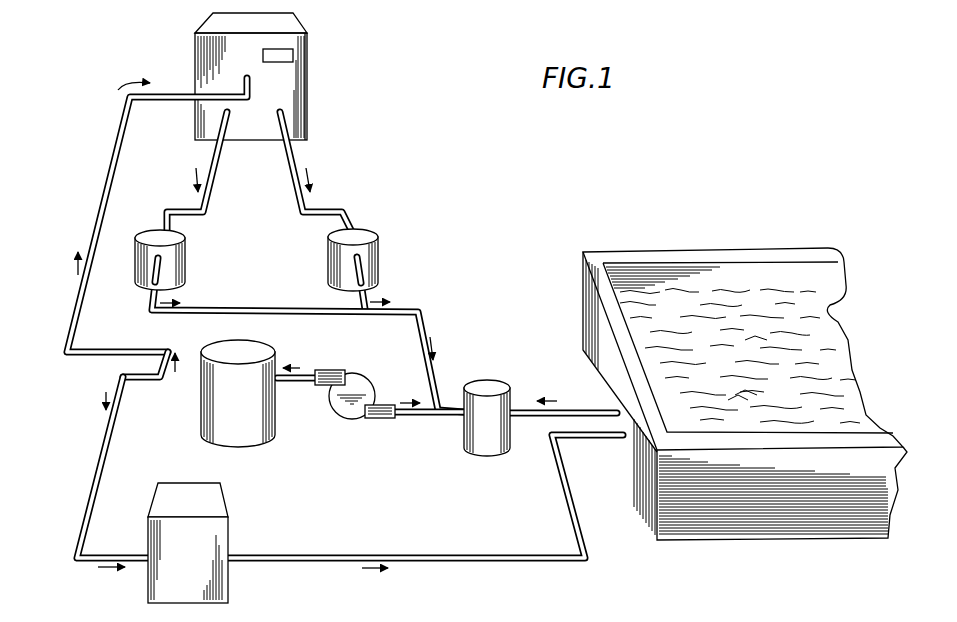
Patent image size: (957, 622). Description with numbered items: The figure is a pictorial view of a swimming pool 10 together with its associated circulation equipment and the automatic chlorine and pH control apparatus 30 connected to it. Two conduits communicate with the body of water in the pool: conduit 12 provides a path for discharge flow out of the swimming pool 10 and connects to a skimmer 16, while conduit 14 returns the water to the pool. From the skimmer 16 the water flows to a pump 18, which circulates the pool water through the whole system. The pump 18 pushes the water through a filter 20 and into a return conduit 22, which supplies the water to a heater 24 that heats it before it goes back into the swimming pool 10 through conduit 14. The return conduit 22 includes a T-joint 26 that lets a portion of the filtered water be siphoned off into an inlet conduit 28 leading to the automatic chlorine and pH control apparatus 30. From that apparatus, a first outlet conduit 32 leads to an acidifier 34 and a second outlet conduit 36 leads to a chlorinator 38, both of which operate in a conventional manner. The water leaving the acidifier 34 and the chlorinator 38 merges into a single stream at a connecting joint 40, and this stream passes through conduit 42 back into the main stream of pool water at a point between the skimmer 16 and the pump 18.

The swimming pool 10 is at (727, 250).
The conduit 12 is at (577, 410).
The conduit 14 is at (585, 438).
The skimmer 16 is at (512, 385).
The pump 18 is at (345, 412).
The filter 20 is at (265, 350).
The return conduit 22 is at (98, 478).
The heater 24 is at (228, 533).
The T-joint 26 is at (165, 380).
The inlet conduit 28 is at (100, 210).
The automatic chlorine and pH control apparatus 30 is at (300, 93).
The first outlet conduit 32 is at (208, 190).
The acidifier 34 is at (185, 270).
The second outlet conduit 36 is at (310, 200).
The chlorinator 38 is at (380, 258).
The connecting joint 40 is at (367, 312).
The conduit 42 is at (460, 362).